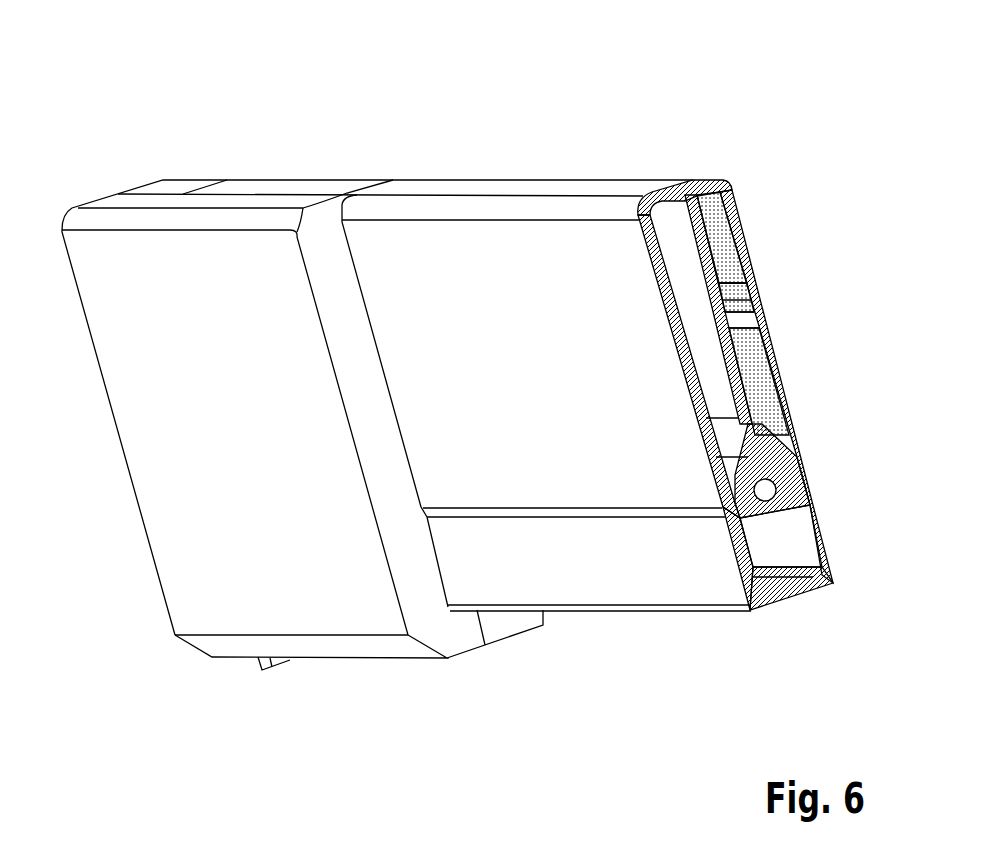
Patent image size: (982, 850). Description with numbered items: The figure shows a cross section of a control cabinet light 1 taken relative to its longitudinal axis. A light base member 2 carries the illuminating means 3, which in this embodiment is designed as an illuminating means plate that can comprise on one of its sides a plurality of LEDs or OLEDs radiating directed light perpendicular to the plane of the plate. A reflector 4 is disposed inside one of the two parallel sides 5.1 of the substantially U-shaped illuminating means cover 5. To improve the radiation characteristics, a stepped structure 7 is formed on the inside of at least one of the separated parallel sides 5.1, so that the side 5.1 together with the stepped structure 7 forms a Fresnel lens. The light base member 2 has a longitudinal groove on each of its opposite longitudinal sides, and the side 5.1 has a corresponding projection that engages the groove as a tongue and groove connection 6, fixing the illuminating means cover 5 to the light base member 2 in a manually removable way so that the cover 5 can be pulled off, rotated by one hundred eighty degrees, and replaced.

The control cabinet light 1 is at (460, 355).
The light base member 2 is at (600, 580).
The illuminating means 3 is at (757, 284).
The reflector 4 is at (732, 234).
The illuminating means cover 5 is at (560, 193).
The parallel side of the illuminating means cover 5.1 is at (668, 248).
The tongue and groove connection 6 is at (802, 460).
The stepped structure 7 is at (778, 357).